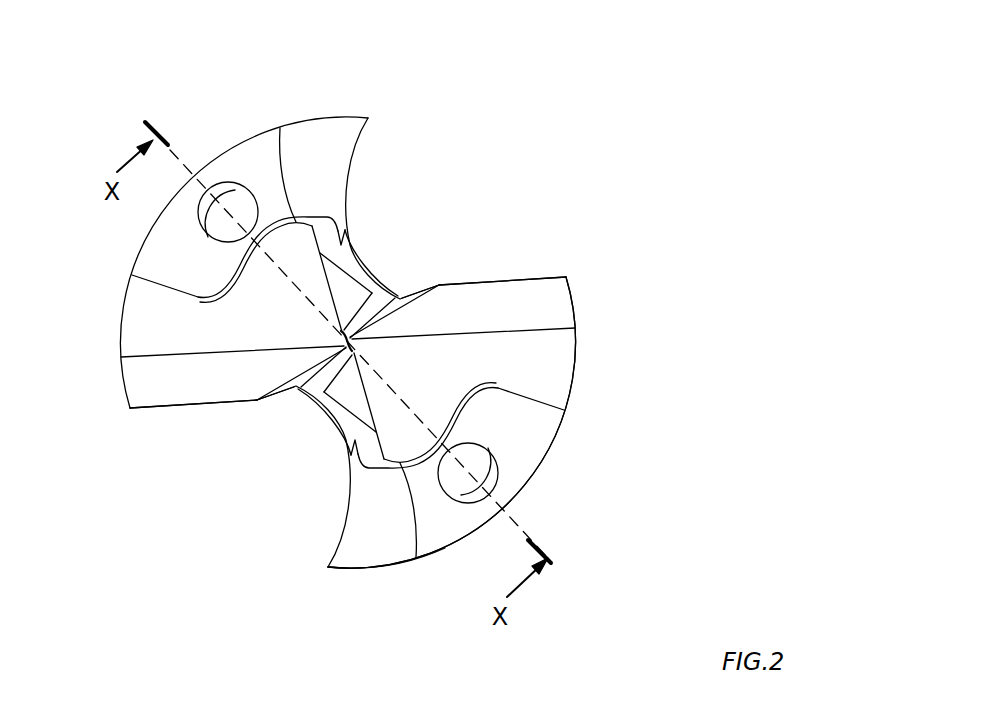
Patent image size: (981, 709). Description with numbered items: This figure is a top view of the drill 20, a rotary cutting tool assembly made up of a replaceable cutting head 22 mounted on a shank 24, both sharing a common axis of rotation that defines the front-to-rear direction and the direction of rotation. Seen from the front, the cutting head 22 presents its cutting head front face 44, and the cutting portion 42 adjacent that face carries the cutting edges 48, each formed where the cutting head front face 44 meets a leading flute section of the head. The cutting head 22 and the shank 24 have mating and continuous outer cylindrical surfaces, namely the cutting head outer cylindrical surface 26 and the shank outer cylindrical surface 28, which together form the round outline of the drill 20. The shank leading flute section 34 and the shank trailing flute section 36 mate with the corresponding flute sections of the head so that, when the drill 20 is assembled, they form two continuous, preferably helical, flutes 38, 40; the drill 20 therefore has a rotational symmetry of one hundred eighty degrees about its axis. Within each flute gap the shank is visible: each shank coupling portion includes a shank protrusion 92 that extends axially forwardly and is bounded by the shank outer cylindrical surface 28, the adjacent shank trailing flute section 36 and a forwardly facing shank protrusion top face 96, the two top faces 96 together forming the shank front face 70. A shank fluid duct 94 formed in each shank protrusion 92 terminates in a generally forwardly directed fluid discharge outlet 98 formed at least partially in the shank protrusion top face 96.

The drill 20 is at (525, 205).
The replaceable cutting head 22 is at (540, 376).
The shank 24 is at (365, 543).
The cutting head outer cylindrical surface 26 is at (576, 350).
The shank outer cylindrical surface 28 is at (447, 547).
The shank leading flute section 34 is at (347, 258).
The shank trailing flute section 36 is at (327, 142).
The cutting head and shank flute 38 is at (342, 430).
The cutting head and shank flute 40 is at (372, 507).
The cutting portion 42 is at (530, 305).
The cutting head front face 44 is at (163, 384).
The cutting edge 48 is at (473, 280).
The shank front face 70 is at (170, 254).
The shank protrusion 92 is at (535, 432).
The shank fluid duct 94 is at (250, 206).
The shank protrusion top face 96 is at (522, 450).
The fluid discharge outlet 98 is at (228, 182).